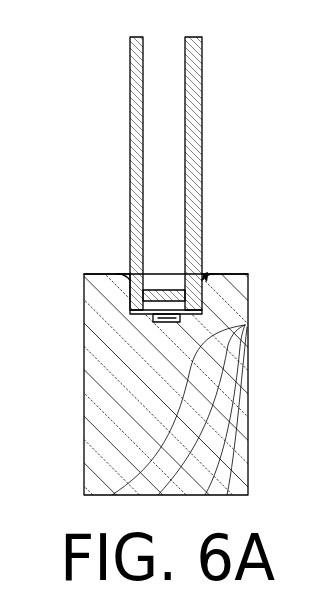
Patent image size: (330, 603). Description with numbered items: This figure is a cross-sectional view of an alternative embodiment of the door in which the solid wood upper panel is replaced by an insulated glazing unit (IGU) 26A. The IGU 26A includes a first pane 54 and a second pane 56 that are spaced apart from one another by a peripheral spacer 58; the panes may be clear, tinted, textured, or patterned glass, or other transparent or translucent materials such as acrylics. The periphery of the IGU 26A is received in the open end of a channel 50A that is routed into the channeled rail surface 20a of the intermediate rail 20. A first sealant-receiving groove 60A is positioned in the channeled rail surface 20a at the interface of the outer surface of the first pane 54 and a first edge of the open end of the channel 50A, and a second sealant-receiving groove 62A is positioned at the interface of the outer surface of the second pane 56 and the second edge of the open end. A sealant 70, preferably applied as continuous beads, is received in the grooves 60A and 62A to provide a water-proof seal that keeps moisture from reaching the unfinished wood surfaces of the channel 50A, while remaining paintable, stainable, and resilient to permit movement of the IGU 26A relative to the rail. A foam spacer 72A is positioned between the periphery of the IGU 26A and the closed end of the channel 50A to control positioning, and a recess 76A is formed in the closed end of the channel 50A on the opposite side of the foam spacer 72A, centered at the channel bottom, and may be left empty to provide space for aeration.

The intermediate rail 20 is at (232, 405).
The channeled rail surface 20a is at (93, 273).
The insulated glazing unit 26A is at (203, 150).
The first pane 54 is at (130, 65).
The second pane 56 is at (203, 65).
The peripheral spacer 58 is at (168, 290).
The first sealant-receiving groove 60A is at (125, 278).
The second sealant-receiving groove 62A is at (207, 278).
The sealant 70 is at (204, 273).
The channel 50A is at (128, 302).
The foam spacer 72A is at (140, 316).
The recess 76A is at (165, 322).